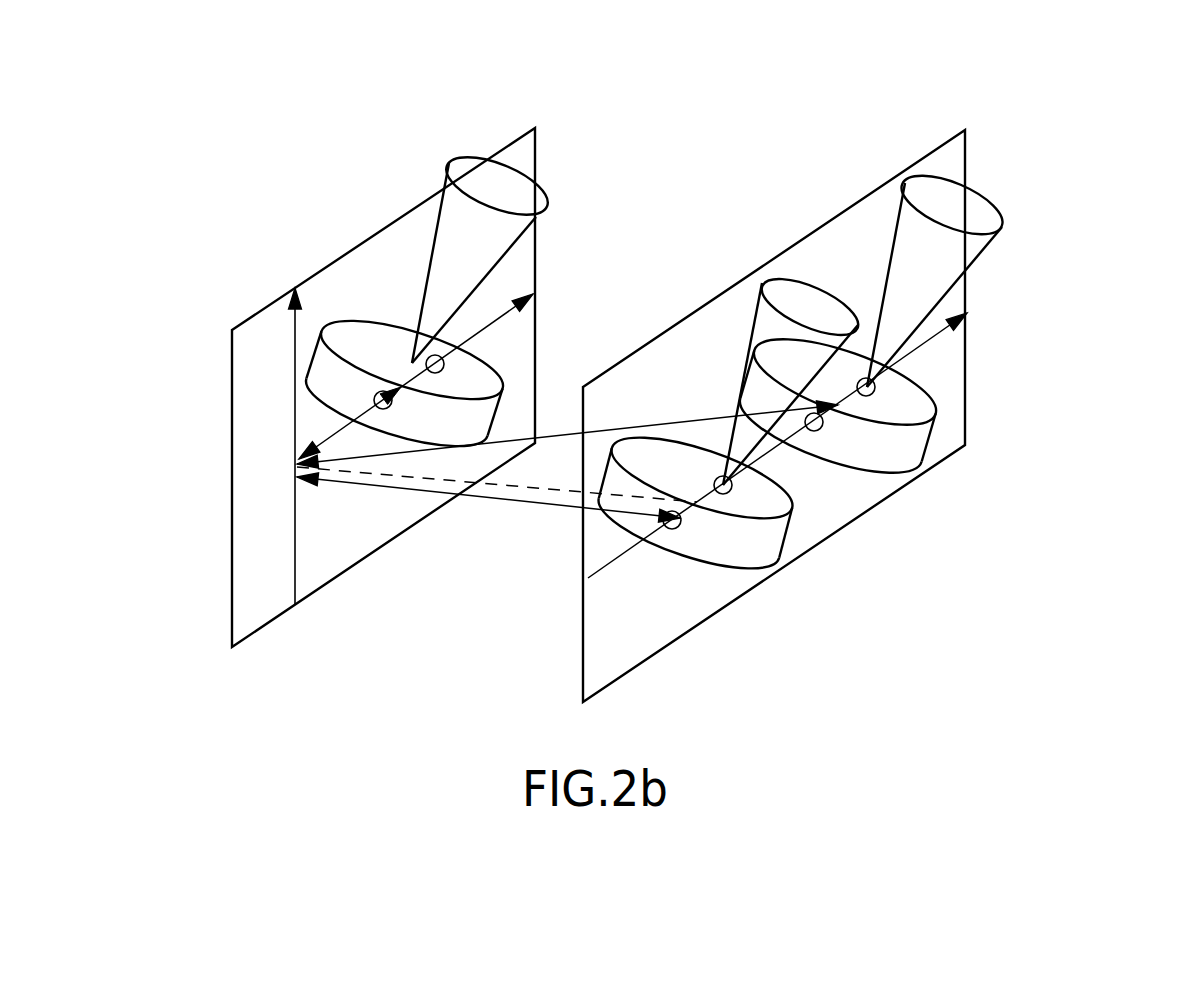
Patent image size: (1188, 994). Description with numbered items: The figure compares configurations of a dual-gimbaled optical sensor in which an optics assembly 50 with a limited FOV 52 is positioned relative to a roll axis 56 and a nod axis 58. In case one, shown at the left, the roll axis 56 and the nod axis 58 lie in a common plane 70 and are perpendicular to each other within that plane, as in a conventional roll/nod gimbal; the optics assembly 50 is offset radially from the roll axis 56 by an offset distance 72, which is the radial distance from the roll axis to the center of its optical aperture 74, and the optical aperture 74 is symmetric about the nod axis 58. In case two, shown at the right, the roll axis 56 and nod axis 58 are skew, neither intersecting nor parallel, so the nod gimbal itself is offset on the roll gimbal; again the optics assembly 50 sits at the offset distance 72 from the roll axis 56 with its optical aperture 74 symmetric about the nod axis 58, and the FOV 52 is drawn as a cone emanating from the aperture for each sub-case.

The optics assembly 50 is at (333, 390).
The FOV 52 is at (470, 203).
The roll axis 56 is at (295, 563).
The nod axis 58 is at (1012, 307).
The common plane 70 is at (538, 140).
The offset distance 72 is at (340, 425).
The optical aperture 74 is at (384, 347).